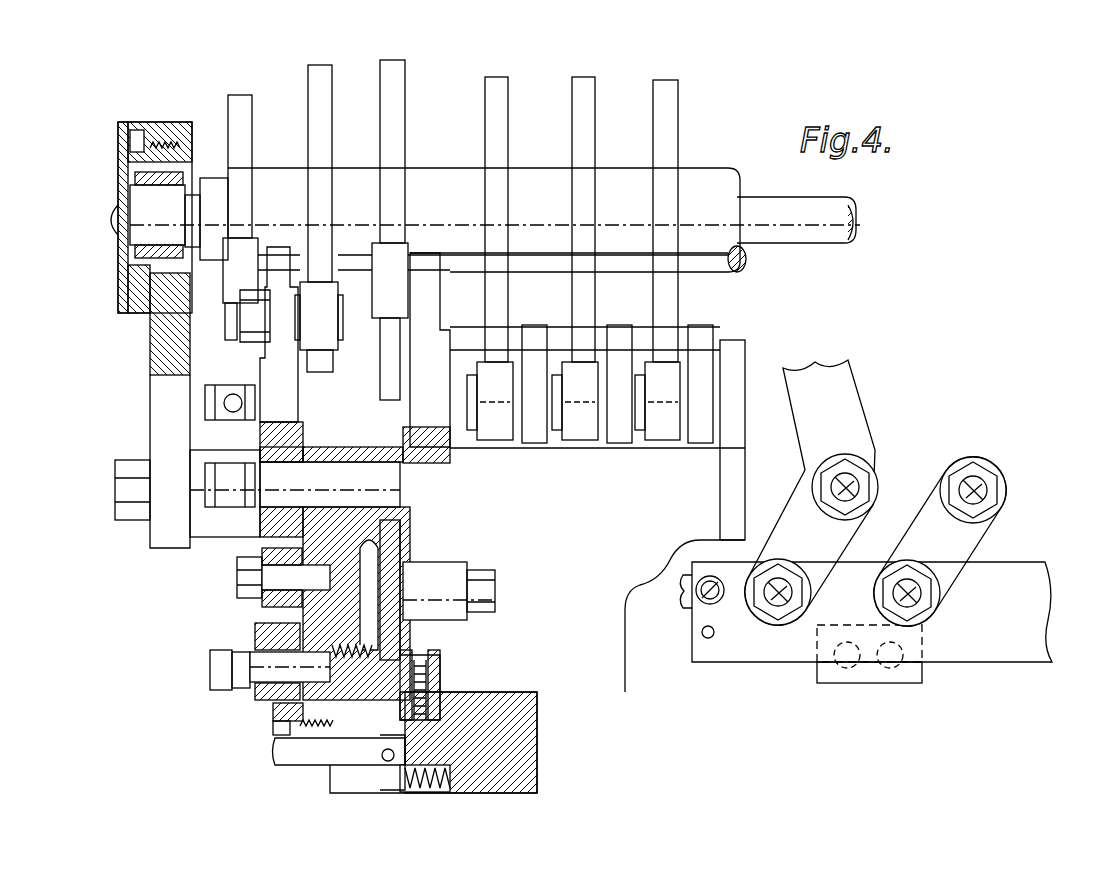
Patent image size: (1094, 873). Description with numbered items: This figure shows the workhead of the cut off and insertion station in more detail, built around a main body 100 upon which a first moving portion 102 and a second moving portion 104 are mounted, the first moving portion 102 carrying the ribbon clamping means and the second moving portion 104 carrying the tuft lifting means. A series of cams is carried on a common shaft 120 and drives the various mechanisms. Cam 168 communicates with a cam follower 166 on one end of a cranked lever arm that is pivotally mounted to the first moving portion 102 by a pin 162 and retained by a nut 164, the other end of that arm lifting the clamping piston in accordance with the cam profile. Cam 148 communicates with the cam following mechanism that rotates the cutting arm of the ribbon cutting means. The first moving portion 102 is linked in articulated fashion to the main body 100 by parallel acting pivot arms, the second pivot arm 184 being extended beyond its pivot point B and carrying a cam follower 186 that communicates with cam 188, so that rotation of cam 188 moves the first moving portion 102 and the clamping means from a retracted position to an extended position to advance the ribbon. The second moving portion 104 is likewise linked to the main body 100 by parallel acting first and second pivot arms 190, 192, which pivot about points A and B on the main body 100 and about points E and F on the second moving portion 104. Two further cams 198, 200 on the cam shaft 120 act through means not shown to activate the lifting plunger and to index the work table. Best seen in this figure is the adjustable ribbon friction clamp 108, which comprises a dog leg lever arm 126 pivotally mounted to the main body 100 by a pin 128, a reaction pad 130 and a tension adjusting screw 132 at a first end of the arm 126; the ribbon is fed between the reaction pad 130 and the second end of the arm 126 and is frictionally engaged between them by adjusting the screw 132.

The main body 100 is at (405, 578).
The first moving portion 102 is at (300, 645).
The second moving portion 104 is at (405, 645).
The adjustable ribbon friction clamp 108 is at (312, 770).
The common shaft 120 is at (820, 173).
The dog leg lever arm 126 is at (290, 752).
The pin 128 is at (402, 750).
The reaction pad 130 is at (275, 712).
The tension adjusting screw 132 is at (442, 780).
The cam 148 is at (503, 127).
The pin 162 is at (275, 580).
The nut 164 is at (243, 560).
The cam follower 166 is at (230, 275).
The cam 168 is at (241, 95).
The second pivot arm 184 is at (265, 375).
The cam follower 186 is at (345, 340).
The cam 188 is at (318, 78).
The first pivot arm 190 is at (965, 540).
The second pivot arm 192 is at (845, 530).
The cam 198 is at (590, 120).
The cam 200 is at (672, 103).
The pivot point A is at (985, 480).
The pivot point B is at (858, 472).
The pivot point E is at (913, 598).
The pivot point F is at (787, 603).